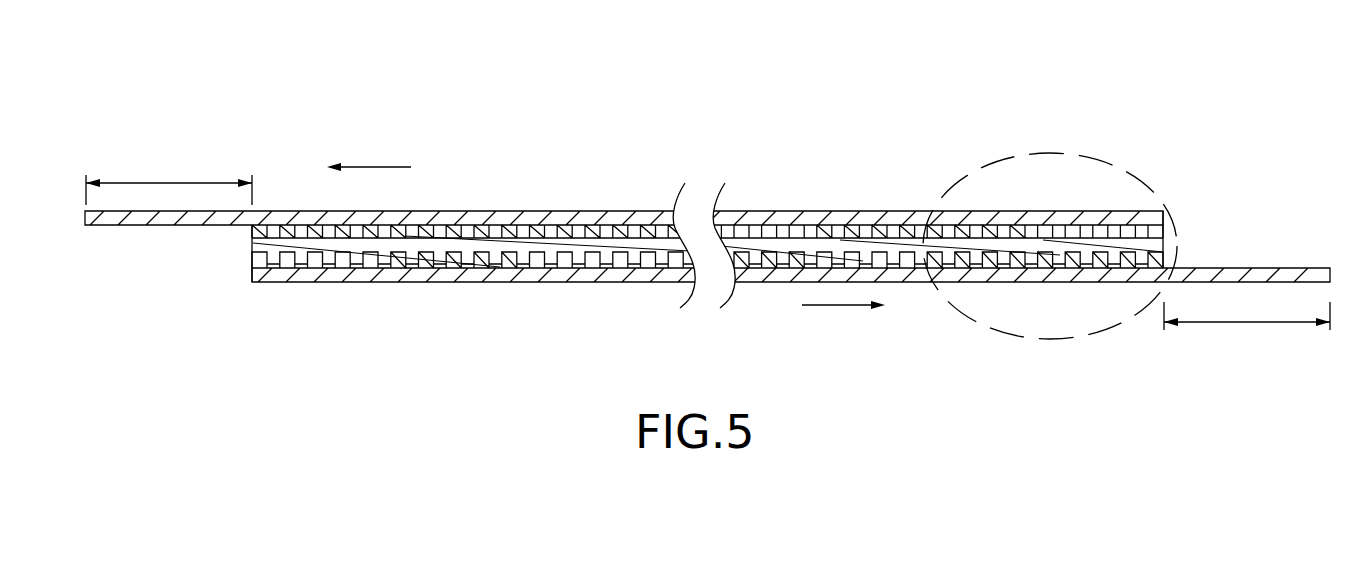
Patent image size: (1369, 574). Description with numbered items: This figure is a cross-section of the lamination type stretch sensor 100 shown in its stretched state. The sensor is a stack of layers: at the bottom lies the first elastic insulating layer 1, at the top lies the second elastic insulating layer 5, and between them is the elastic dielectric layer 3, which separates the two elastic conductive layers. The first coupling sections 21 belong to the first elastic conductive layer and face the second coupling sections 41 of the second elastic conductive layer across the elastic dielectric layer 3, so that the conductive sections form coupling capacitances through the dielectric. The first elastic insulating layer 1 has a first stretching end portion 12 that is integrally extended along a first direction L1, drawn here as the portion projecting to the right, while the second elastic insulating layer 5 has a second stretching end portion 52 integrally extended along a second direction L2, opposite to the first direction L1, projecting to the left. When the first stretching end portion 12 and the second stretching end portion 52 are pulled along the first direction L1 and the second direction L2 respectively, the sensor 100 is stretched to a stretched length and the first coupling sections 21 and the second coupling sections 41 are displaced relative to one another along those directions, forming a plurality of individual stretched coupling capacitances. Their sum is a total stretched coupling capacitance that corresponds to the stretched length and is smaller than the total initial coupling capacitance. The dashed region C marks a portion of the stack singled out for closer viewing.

The lamination type stretch sensor 100 is at (790, 135).
The first elastic insulating layer 1 is at (315, 276).
The second elastic insulating layer 5 is at (572, 211).
The elastic dielectric layer 3 is at (253, 248).
The second coupling sections 41 is at (1158, 233).
The first coupling sections 21 is at (1158, 261).
The second stretching end portion 52 is at (167, 183).
The first stretching end portion 12 is at (1247, 327).
The enlarged region C is at (985, 165).
The first direction L1 is at (843, 319).
The second direction L2 is at (369, 156).